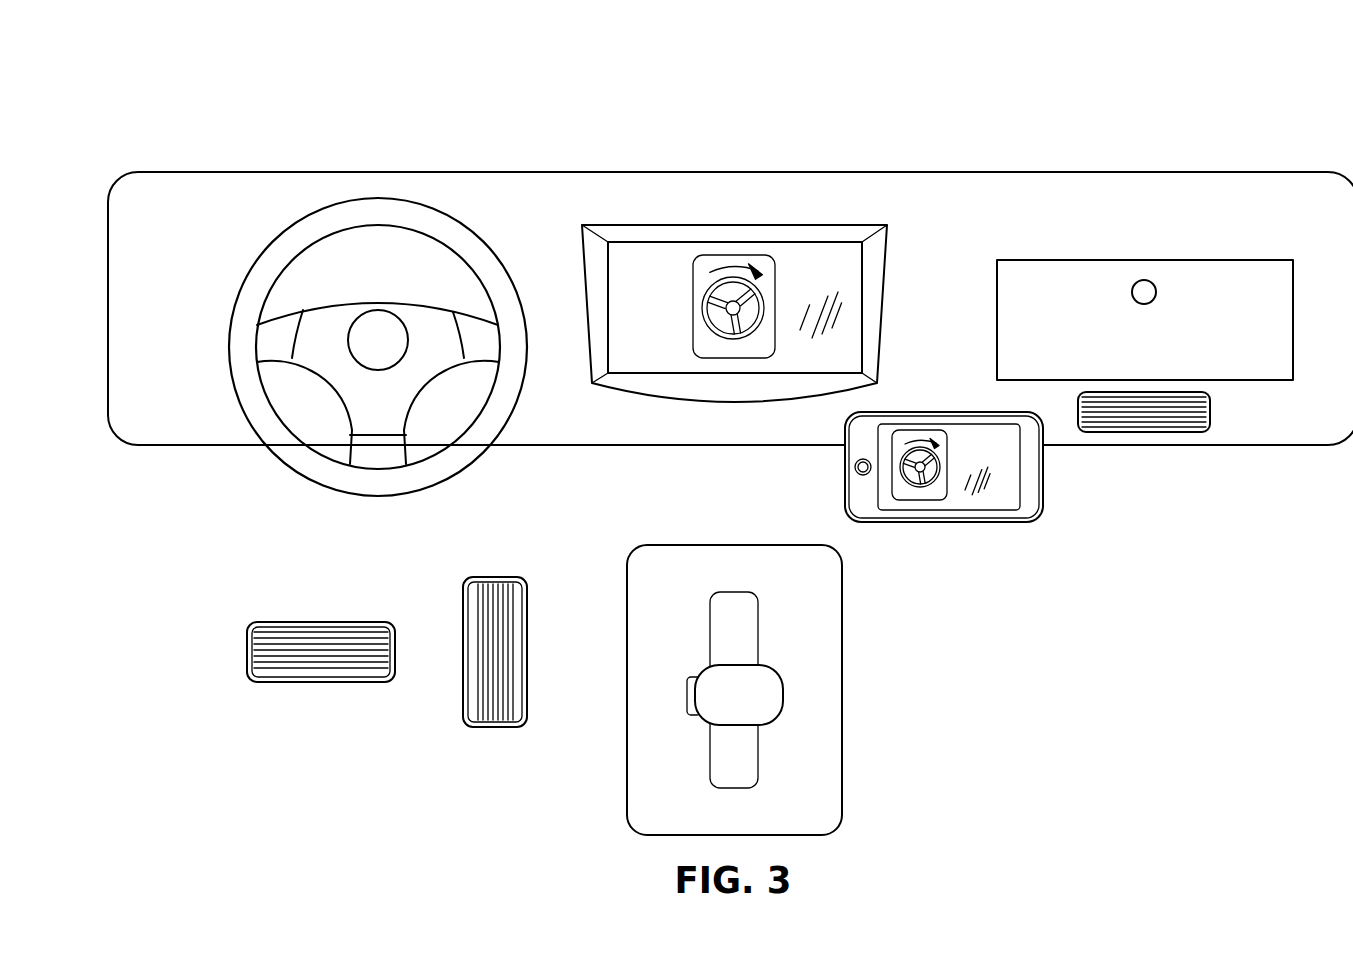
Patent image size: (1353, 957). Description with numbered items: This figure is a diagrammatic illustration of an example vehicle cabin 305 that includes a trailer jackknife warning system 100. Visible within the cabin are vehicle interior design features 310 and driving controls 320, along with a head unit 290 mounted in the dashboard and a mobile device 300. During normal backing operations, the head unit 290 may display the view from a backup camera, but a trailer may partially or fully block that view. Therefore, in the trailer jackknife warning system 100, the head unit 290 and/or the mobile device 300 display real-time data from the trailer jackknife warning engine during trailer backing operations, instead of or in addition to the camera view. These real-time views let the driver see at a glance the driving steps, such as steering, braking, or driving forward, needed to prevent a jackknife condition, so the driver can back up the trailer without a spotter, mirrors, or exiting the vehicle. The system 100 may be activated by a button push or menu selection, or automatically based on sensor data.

The trailer jackknife warning system 100 is at (510, 146).
The head unit 290 is at (652, 250).
The mobile device 300 is at (945, 522).
The vehicle cabin 305 is at (980, 91).
The vehicle interior design features 310 is at (1227, 270).
The driving controls 320 is at (307, 470).